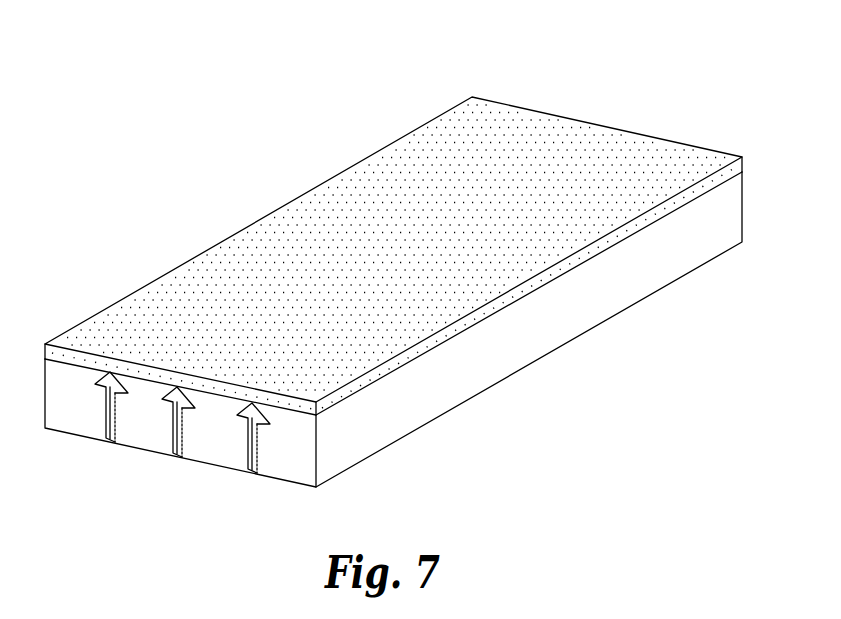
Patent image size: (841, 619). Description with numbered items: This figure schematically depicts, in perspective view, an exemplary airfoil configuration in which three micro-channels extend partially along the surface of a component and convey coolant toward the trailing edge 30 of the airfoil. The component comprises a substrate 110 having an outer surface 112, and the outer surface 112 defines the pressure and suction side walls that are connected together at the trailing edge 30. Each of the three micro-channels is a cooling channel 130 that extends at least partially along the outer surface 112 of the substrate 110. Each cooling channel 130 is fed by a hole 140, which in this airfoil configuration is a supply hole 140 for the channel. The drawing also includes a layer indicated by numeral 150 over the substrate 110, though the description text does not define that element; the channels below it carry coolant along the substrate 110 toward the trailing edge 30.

The trailing edge 30 is at (398, 266).
The substrate 110 is at (670, 257).
The outer surface 112 is at (328, 410).
The cooling channel 130 is at (235, 418).
The supply hole 140 is at (250, 465).
The top layer / surface coating 150 is at (560, 128).